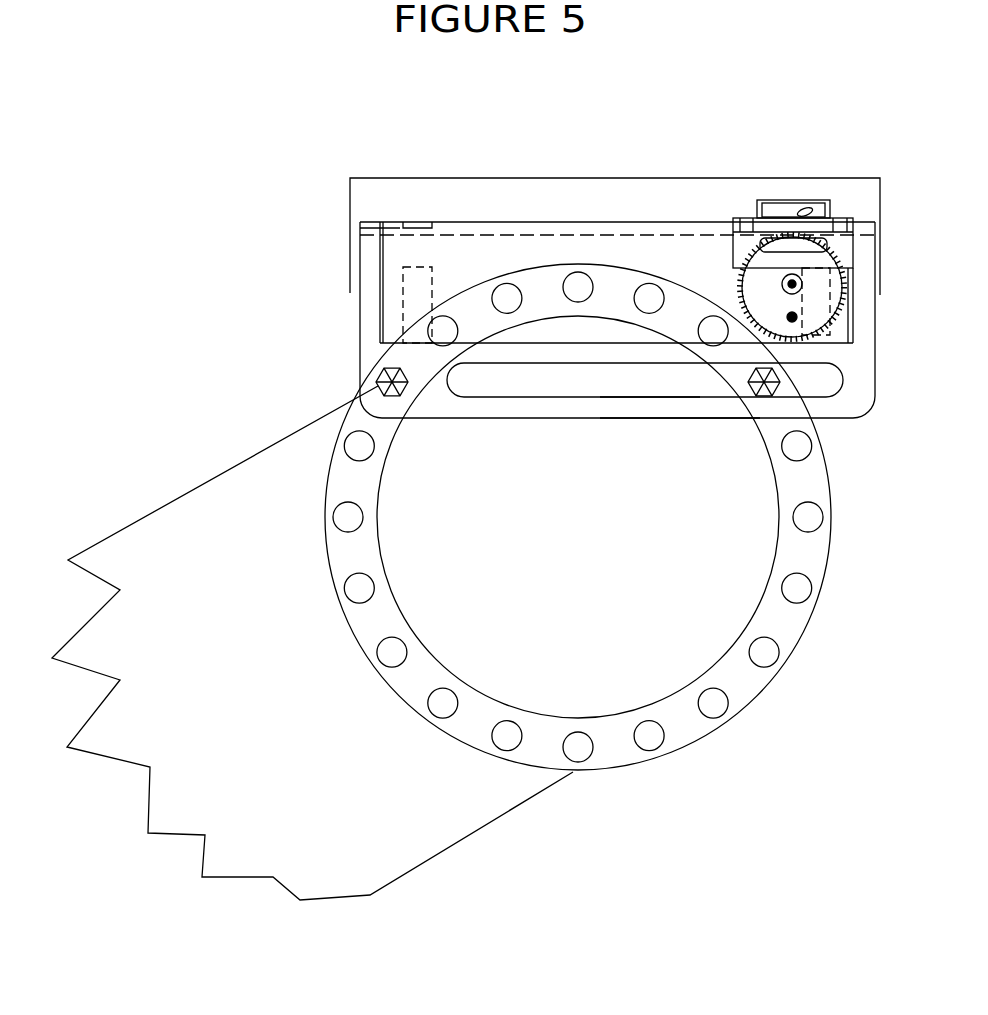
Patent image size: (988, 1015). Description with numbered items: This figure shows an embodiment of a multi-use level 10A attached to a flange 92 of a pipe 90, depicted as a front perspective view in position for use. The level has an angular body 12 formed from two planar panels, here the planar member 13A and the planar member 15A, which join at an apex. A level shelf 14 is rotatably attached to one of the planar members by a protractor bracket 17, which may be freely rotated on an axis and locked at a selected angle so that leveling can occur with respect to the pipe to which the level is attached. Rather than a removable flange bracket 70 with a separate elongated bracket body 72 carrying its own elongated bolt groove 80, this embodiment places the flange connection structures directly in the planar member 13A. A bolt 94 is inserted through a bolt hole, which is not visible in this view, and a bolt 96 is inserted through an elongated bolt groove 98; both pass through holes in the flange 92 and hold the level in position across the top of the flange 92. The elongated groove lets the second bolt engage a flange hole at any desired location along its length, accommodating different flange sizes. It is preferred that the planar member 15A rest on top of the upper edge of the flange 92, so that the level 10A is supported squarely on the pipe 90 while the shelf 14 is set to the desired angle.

The multi-use level 10A is at (573, 150).
The angular body 12 is at (663, 223).
The planar member 13A is at (502, 250).
The level shelf 14 is at (748, 223).
The planar member 15A is at (457, 235).
The protractor bracket 17 is at (821, 237).
The flange bracket 70 is at (503, 382).
The elongated bracket body 72 is at (572, 405).
The elongated bolt groove 80 is at (678, 385).
The pipe 90 is at (235, 509).
The flange 92 is at (685, 730).
The bolt 94 is at (377, 381).
The bolt 96 is at (756, 393).
The elongated bolt groove 98 is at (636, 385).